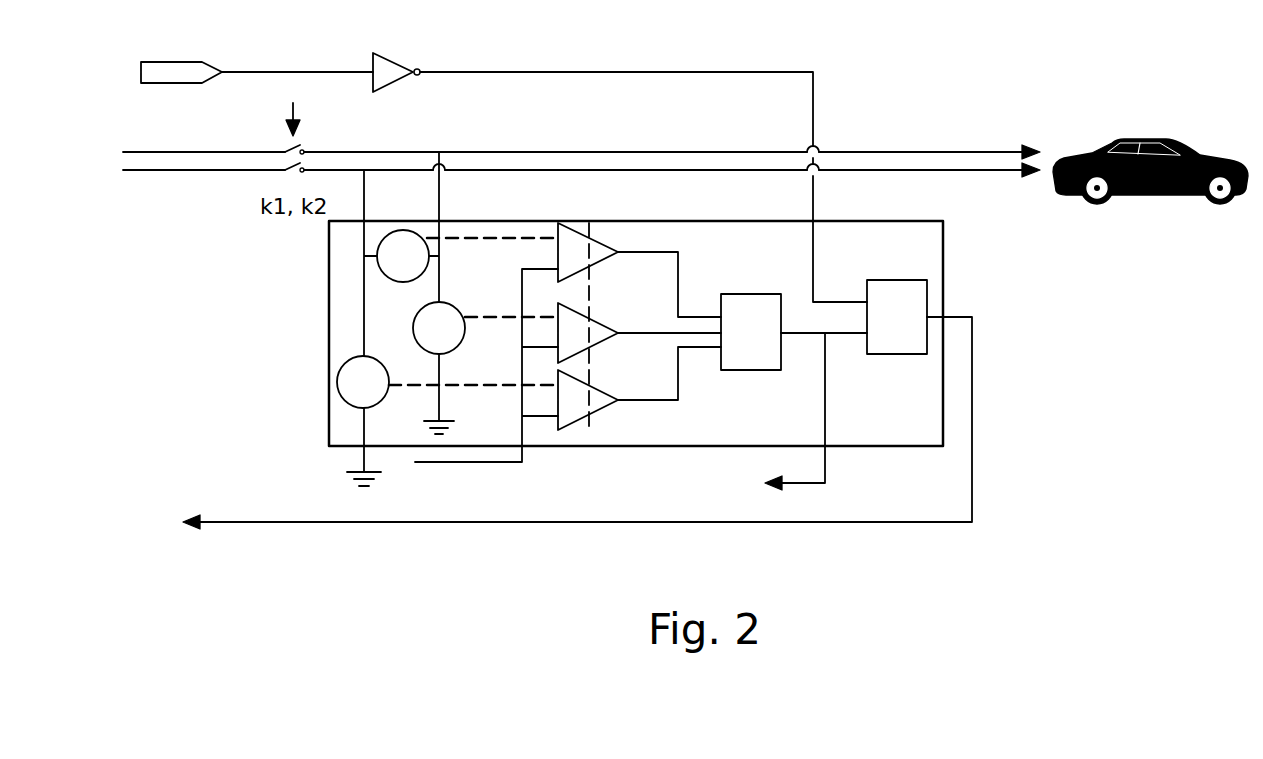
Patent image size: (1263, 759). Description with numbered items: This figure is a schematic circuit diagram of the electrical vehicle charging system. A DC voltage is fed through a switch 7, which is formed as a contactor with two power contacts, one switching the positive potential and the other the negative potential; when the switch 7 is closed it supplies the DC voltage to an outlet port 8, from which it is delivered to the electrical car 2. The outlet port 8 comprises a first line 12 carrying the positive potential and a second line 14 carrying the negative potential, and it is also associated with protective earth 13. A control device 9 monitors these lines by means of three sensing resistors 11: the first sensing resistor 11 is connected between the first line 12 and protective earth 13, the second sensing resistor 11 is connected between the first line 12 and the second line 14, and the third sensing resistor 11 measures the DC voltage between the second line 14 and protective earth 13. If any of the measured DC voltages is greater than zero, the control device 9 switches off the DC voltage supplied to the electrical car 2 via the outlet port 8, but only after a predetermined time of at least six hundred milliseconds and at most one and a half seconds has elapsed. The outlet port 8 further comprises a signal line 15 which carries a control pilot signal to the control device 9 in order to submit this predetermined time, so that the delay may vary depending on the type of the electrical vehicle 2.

The electrical vehicle 2 is at (1195, 162).
The switch 7 is at (284, 158).
The outlet port 8 is at (827, 158).
The control device 9 is at (577, 375).
The sensing resistor 11 is at (447, 312).
The first line 12 is at (486, 170).
The protective earth 13 is at (437, 407).
The second line 14 is at (534, 152).
The signal line 15 is at (797, 71).